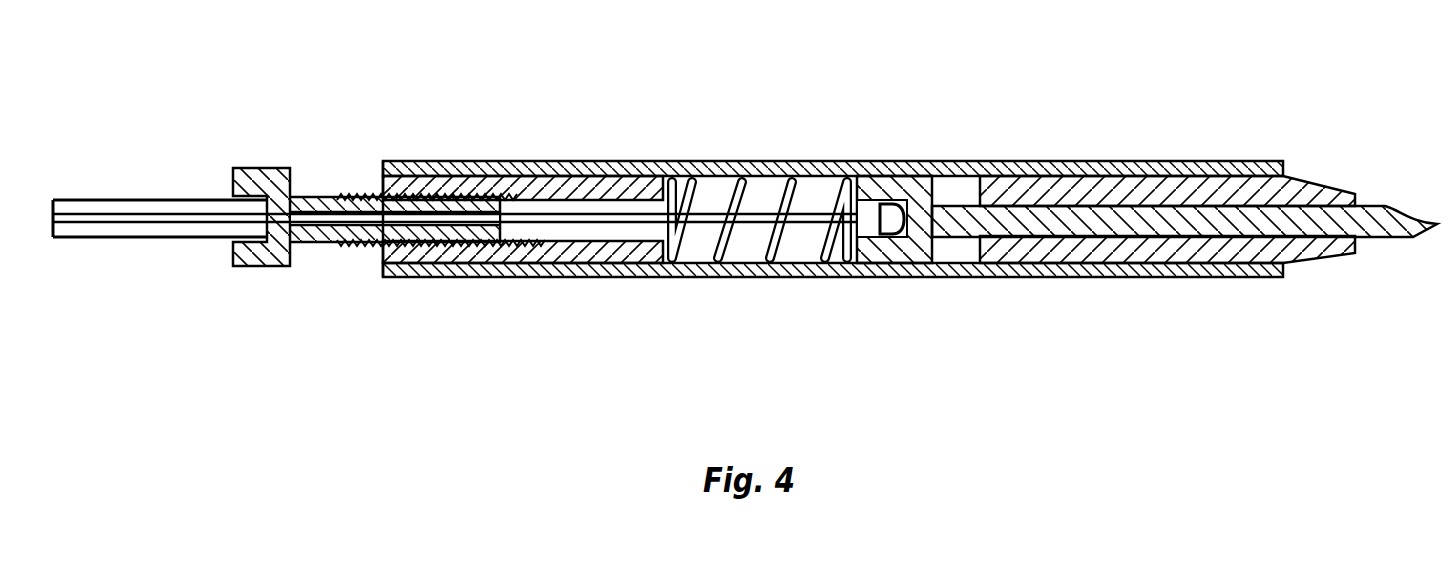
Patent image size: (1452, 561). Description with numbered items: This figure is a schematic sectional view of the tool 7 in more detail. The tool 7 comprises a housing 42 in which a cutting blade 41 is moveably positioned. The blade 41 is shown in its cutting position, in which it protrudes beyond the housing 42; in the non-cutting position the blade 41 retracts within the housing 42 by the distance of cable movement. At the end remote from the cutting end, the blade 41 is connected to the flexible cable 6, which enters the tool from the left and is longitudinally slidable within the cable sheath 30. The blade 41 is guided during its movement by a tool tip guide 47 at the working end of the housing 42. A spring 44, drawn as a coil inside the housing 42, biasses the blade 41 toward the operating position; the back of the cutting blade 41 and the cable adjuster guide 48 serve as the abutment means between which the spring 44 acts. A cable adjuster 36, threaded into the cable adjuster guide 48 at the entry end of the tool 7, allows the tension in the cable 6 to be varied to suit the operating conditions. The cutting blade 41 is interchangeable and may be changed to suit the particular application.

The tool 7 is at (745, 196).
The flexible cable 6 is at (182, 215).
The cable sheath 30 is at (102, 230).
The cable adjuster 36 is at (267, 267).
The housing 42 is at (866, 163).
The spring 44 is at (797, 237).
The tool tip guide 47 is at (1053, 252).
The cable adjuster guide 48 is at (547, 250).
The cutting blade 41 is at (1397, 243).